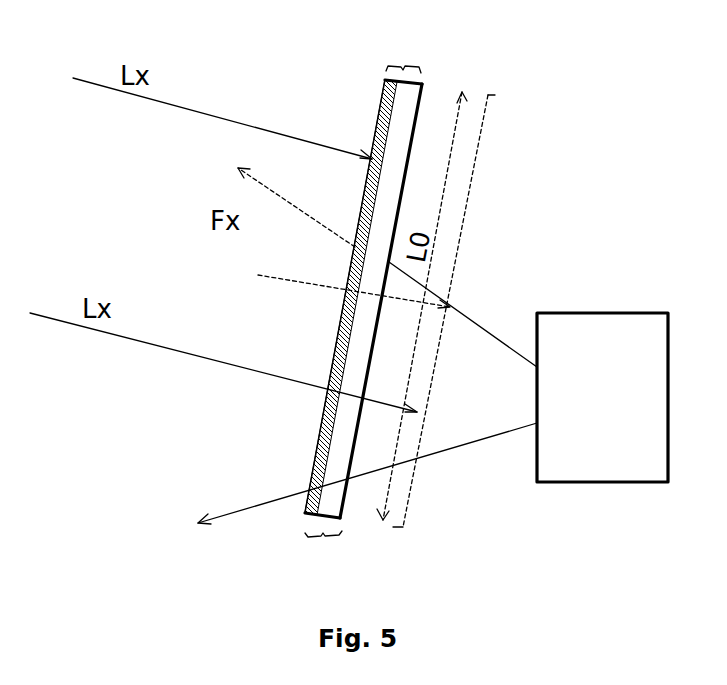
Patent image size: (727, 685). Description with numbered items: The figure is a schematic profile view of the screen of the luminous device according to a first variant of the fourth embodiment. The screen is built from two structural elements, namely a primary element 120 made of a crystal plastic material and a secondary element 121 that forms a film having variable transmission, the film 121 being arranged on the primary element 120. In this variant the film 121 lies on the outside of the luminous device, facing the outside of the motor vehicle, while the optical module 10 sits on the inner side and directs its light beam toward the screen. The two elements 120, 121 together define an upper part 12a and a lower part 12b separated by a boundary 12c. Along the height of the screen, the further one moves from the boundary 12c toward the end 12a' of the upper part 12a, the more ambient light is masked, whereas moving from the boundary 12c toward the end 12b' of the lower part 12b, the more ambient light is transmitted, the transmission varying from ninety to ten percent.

The optical module 10 is at (602, 397).
The upper part 12a is at (460, 154).
The end of the upper part 12a' is at (420, 48).
The lower part 12b is at (397, 459).
The end of the lower part 12b' is at (320, 549).
The boundary 12c is at (354, 280).
The primary element 120 is at (393, 177).
The secondary element 121 is at (337, 347).